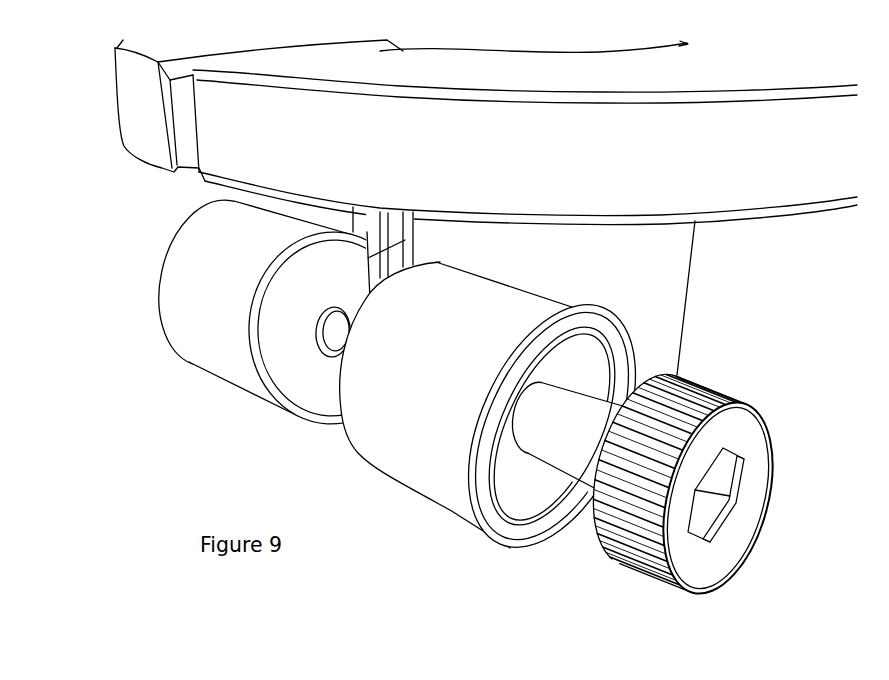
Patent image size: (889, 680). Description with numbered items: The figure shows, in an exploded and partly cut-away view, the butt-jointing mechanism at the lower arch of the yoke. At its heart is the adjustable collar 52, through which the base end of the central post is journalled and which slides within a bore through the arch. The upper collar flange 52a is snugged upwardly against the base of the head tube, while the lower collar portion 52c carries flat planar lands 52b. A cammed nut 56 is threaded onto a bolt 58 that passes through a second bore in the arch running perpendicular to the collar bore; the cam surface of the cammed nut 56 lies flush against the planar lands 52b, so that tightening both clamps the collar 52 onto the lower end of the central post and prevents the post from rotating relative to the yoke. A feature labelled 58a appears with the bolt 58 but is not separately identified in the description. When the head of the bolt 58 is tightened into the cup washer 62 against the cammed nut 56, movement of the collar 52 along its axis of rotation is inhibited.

The adjustable collar 52 is at (454, 207).
The upper collar flange 52a is at (562, 73).
The planar lands 52b is at (353, 210).
The lower collar portion 52c is at (588, 248).
The cammed nut 56 is at (198, 390).
The bolt 58 is at (773, 452).
The shaft of knob 58a is at (405, 233).
The cup washer 62 is at (505, 402).